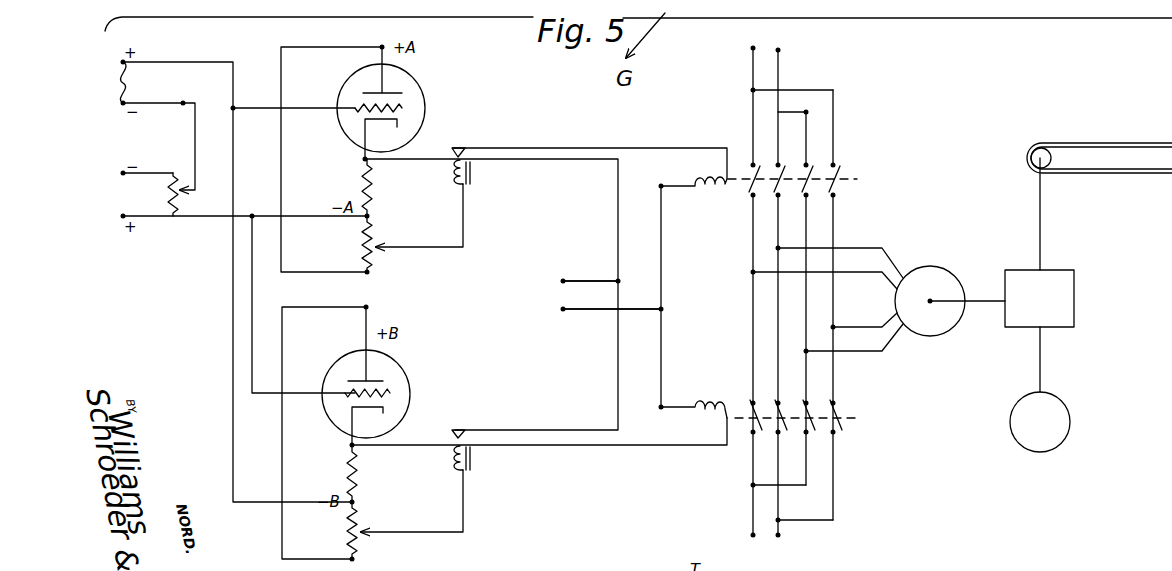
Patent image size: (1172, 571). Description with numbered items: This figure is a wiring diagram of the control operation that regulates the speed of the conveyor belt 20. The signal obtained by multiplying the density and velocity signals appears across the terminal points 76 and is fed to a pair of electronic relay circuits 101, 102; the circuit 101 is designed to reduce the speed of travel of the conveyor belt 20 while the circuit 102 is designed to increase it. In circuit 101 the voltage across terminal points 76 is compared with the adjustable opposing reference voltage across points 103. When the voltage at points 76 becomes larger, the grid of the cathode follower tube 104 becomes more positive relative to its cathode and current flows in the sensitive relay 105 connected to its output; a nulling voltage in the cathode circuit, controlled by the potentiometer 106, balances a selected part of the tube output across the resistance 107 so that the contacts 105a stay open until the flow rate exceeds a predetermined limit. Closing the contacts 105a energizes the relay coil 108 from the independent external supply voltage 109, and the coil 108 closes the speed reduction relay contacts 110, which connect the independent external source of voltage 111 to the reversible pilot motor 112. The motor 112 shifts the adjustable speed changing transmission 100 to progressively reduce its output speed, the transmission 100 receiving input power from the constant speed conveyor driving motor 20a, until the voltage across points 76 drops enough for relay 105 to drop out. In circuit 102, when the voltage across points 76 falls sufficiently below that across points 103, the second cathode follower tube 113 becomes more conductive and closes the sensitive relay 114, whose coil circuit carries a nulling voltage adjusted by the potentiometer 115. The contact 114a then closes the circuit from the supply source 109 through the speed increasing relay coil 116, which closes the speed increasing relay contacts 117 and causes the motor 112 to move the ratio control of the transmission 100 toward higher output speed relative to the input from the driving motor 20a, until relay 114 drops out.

The terminal points 76 is at (110, 82).
The points 103 is at (183, 196).
The cathode follower tube 104 is at (421, 84).
The electronic relay circuit 101 is at (483, 111).
The sensitive relay 105 is at (476, 173).
The contacts of relay 105a is at (470, 150).
The potentiometer 106 is at (363, 246).
The resistance 107 is at (363, 186).
The relay coil 108 is at (712, 190).
The independent external supply voltage 109 is at (562, 296).
The speed reduction relay contacts 110 is at (793, 197).
The independent external source of voltage 111 is at (767, 45).
The reversible pilot motor 112 is at (933, 336).
The second cathode follower tube 113 is at (399, 360).
The sensitive relay 114 is at (475, 462).
The contact of relay 114a is at (469, 431).
The potentiometer 115 is at (349, 533).
The speed increasing relay coil 116 is at (705, 412).
The speed increasing relay contacts 117 is at (818, 418).
The electronic relay circuit 102 is at (478, 400).
The adjustable speed changing transmission 100 is at (1054, 306).
The conveyor belt 20 is at (1110, 143).
The constant speed conveyor driving motor 20a is at (1057, 431).